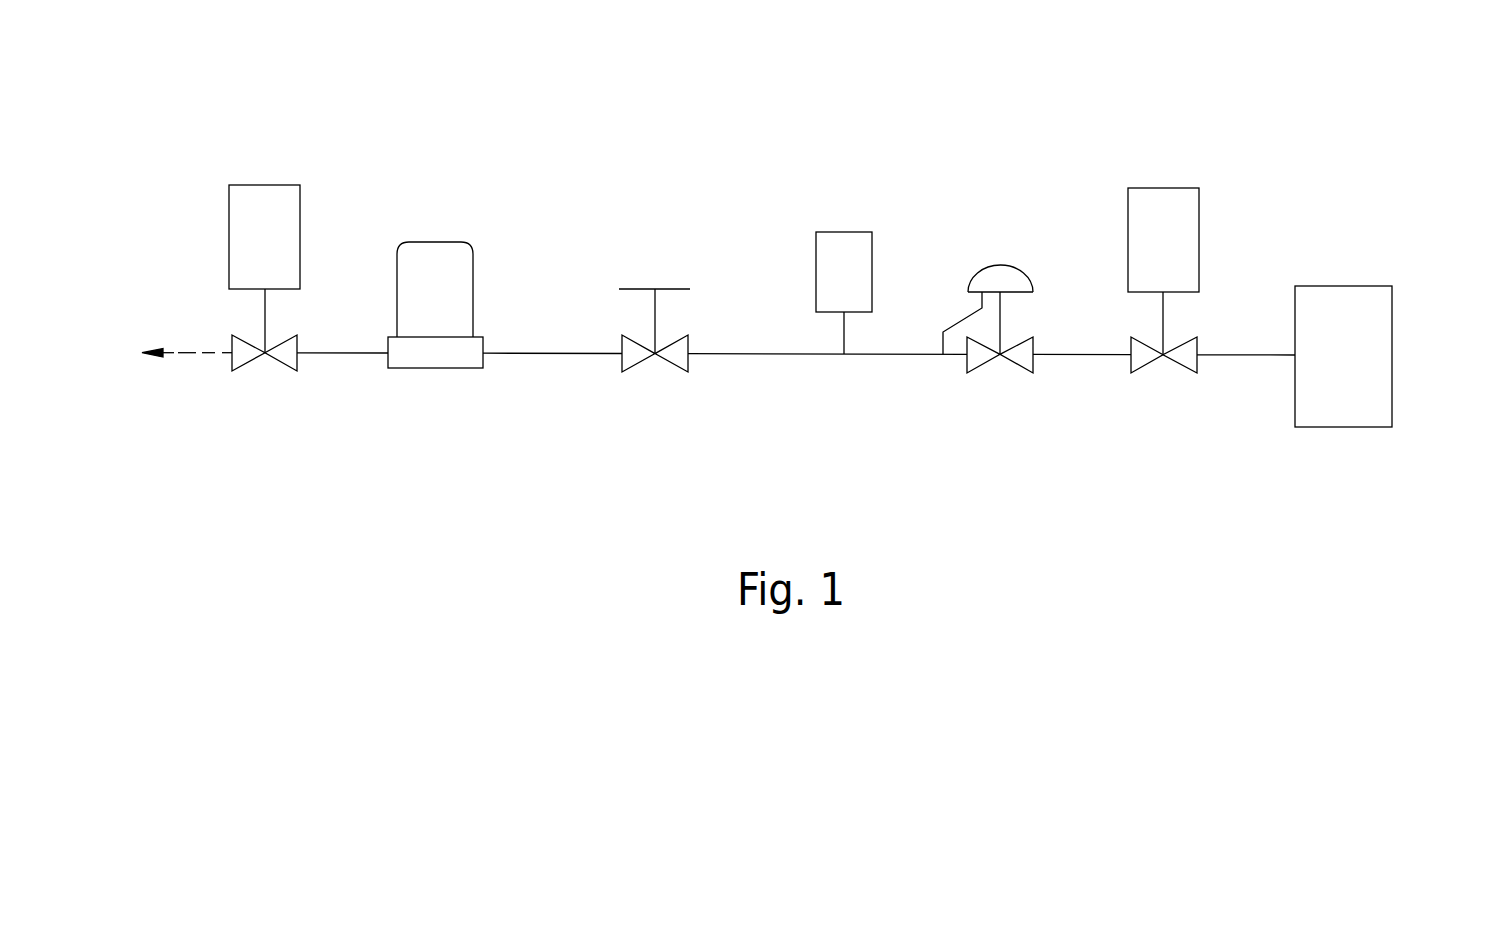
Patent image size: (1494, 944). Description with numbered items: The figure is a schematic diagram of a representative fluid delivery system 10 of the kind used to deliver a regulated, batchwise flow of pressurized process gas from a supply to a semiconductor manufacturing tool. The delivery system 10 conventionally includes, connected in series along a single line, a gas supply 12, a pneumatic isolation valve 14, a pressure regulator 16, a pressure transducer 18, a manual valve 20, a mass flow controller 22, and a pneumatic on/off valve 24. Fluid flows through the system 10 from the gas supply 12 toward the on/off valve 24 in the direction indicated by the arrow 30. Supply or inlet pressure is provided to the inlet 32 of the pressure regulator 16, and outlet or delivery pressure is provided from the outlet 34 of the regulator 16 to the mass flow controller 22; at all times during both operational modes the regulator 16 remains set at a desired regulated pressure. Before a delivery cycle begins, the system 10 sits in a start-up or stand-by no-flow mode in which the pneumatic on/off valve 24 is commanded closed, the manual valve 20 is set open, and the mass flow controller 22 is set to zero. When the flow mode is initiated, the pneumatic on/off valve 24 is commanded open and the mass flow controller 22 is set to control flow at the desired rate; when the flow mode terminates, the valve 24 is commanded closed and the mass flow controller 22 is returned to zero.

The delivery system 10 is at (1154, 71).
The gas supply 12 is at (1392, 403).
The pneumatic isolation valve 14 is at (1199, 226).
The pressure regulator 16 is at (1005, 263).
The pressure transducer 18 is at (816, 273).
The manual valve 20 is at (673, 363).
The mass flow controller 22 is at (473, 268).
The pneumatic on/off valve 24 is at (300, 210).
The arrow 30 is at (192, 353).
The inlet of the regulator 32 is at (1033, 360).
The outlet of the regulator 34 is at (967, 360).